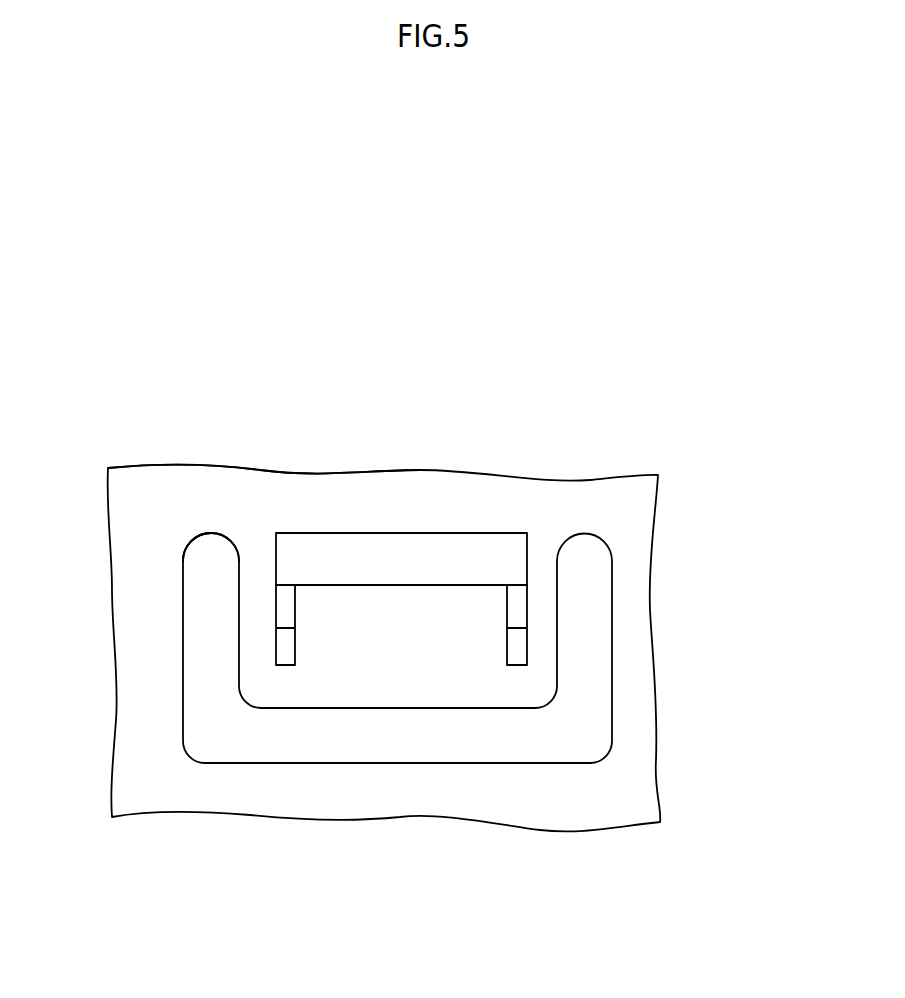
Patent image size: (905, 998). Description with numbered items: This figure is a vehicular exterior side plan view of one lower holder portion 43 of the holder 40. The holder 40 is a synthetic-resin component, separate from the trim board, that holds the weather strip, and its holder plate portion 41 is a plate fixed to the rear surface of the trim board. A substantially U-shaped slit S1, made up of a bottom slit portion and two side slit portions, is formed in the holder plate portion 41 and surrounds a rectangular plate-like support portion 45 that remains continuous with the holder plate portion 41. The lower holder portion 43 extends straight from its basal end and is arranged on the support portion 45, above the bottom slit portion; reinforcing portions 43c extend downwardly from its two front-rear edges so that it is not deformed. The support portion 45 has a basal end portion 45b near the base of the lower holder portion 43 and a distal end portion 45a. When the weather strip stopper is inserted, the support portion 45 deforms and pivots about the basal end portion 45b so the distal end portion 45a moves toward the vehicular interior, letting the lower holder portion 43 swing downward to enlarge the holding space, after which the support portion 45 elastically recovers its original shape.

The holder 40 is at (660, 505).
The holder plate portion 41 is at (211, 475).
The lower holder portion 43 is at (417, 533).
The reinforcing portion 43c is at (285, 606).
The support portion 45 is at (540, 556).
The distal end portion of support portion 45a is at (400, 710).
The basal end portion of support portion 45b is at (260, 542).
The slit S1 is at (205, 532).